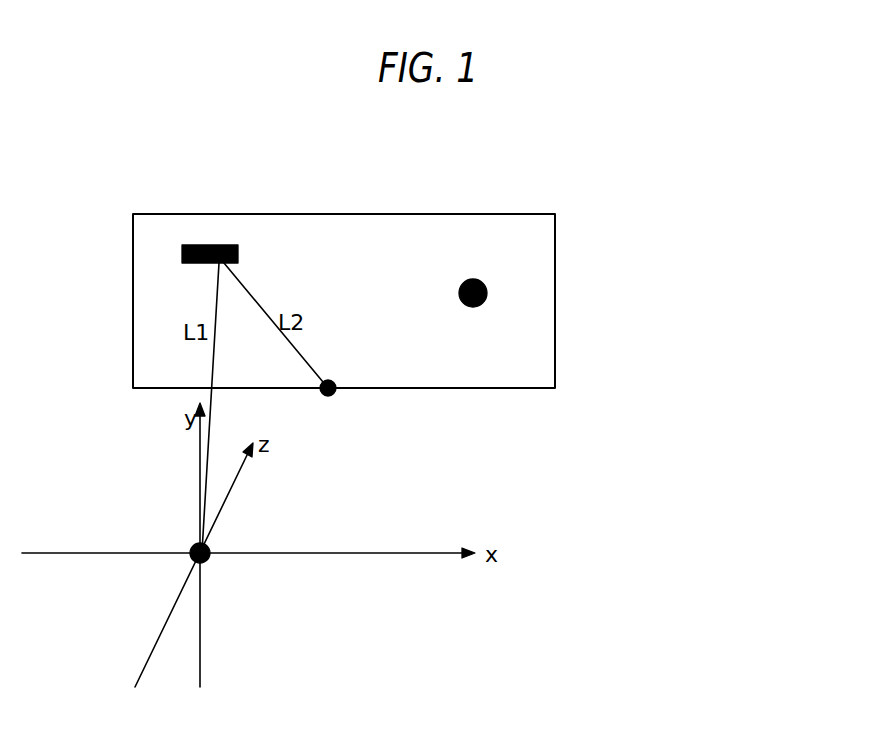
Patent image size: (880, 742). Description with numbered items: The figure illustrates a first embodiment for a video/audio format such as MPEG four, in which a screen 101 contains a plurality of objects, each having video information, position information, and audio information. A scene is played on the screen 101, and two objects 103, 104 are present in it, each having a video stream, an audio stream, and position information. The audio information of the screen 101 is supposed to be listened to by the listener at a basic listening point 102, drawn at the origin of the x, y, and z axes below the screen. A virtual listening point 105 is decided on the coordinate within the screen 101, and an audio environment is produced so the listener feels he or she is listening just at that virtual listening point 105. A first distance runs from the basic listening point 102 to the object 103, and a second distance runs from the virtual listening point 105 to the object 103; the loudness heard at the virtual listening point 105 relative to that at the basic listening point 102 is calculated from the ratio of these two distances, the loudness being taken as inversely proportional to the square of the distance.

The screen 101 is at (555, 243).
The basic listening point 102 is at (208, 549).
The object 103 is at (215, 246).
The object 104 is at (485, 300).
The virtual listening point 105 is at (331, 396).